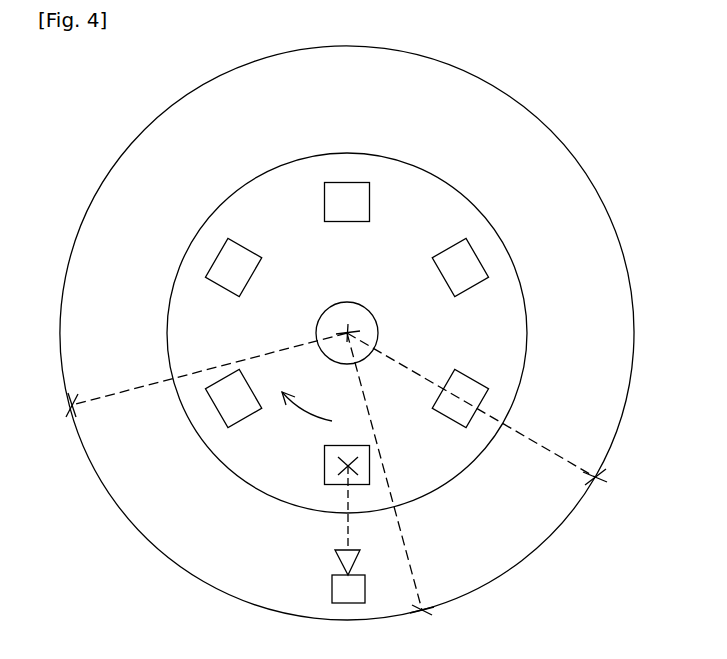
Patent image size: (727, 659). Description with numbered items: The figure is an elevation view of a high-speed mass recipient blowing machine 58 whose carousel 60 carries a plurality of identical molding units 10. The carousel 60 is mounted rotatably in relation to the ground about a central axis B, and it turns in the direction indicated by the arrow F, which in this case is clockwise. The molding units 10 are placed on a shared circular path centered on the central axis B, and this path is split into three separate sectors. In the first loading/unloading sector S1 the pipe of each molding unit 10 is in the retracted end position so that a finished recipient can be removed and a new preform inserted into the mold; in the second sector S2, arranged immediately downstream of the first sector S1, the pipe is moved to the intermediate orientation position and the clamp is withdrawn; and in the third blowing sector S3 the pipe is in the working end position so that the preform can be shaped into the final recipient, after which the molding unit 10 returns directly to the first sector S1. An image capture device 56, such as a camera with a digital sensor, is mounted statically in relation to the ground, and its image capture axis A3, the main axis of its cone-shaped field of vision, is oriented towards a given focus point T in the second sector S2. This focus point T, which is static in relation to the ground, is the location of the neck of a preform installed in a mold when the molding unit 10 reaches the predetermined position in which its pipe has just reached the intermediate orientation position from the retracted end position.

The molding unit 10 is at (353, 202).
The image capture device 56 is at (343, 592).
The blowing machine 58 is at (562, 363).
The carousel 60 is at (492, 323).
The central axis B is at (352, 330).
The focus point T is at (355, 465).
The arrow indicating direction of rotation F is at (307, 418).
The image capture axis A3 is at (347, 533).
The first loading/unloading sector S1 is at (537, 553).
The second sector S2 is at (147, 537).
The third blowing sector S3 is at (459, 70).